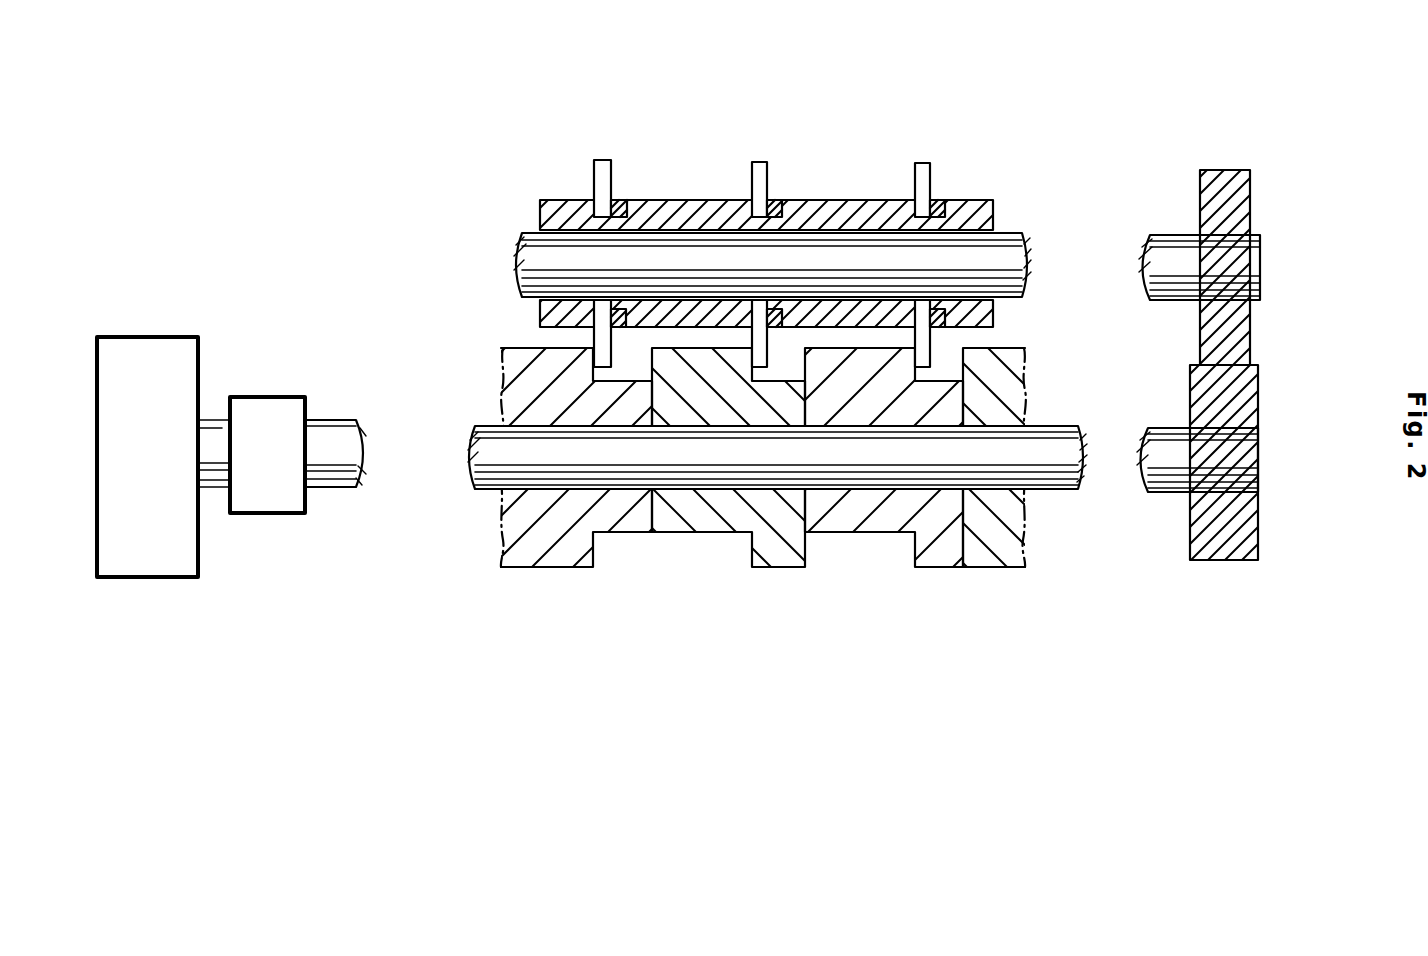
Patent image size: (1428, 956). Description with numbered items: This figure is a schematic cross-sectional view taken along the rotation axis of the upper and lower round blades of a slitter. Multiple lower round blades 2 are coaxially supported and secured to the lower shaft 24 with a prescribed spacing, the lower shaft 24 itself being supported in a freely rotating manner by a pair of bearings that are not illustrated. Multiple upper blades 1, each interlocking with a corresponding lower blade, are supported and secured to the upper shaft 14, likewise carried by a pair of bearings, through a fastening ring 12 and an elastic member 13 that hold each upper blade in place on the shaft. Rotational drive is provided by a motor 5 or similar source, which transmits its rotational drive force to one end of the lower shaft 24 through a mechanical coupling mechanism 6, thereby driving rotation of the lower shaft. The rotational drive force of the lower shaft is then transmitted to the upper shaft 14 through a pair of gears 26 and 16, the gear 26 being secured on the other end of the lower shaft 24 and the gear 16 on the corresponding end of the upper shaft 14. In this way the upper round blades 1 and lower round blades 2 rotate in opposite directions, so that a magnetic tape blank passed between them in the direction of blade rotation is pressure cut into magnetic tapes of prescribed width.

The upper round blade 1 is at (594, 172).
The lower round blade 2 is at (573, 548).
The motor 5 is at (143, 525).
The mechanical coupling mechanism 6 is at (263, 472).
The fastening ring 12 is at (708, 205).
The elastic member 13 is at (620, 200).
The upper shaft 14 is at (1007, 255).
The gear 16 is at (1218, 197).
The lower shaft 24 is at (1053, 440).
The gear 26 is at (1218, 527).